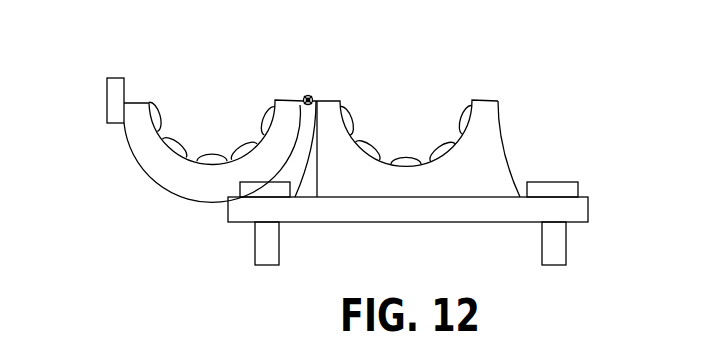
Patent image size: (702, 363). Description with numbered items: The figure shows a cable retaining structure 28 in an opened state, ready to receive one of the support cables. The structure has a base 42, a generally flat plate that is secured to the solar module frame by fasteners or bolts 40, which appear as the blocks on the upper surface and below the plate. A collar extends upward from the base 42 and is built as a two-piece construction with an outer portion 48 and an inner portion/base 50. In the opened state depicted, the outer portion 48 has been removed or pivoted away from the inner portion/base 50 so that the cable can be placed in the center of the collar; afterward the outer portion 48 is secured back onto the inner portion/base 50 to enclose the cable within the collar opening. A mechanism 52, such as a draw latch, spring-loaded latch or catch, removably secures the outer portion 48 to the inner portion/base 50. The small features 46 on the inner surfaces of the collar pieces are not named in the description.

The cable retaining structure 28 is at (581, 62).
The fasteners or bolts 40 is at (255, 248).
The base 42 is at (588, 207).
The bumps 46 is at (212, 145).
The outer portion 48 is at (158, 173).
The inner portion/base 50 is at (500, 125).
The mechanism 52 is at (107, 95).